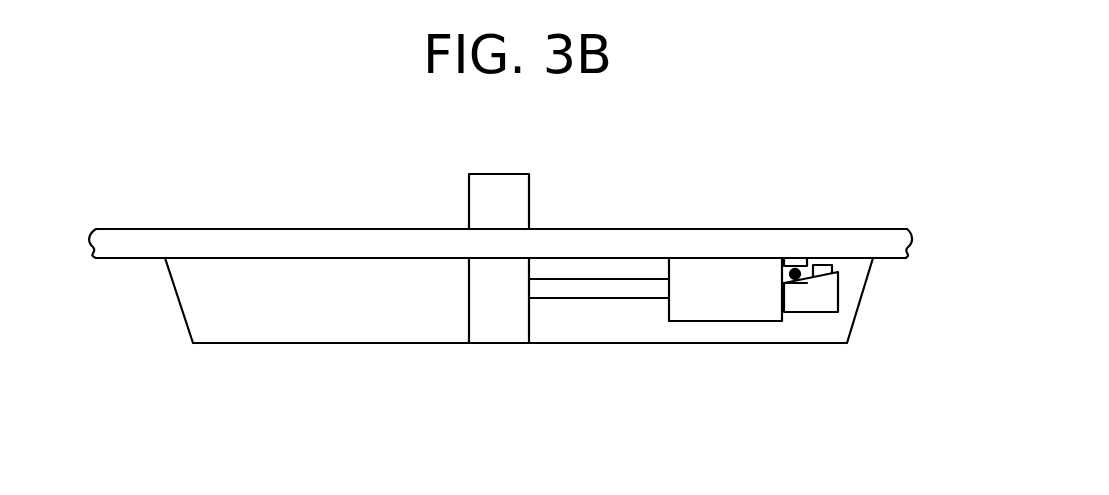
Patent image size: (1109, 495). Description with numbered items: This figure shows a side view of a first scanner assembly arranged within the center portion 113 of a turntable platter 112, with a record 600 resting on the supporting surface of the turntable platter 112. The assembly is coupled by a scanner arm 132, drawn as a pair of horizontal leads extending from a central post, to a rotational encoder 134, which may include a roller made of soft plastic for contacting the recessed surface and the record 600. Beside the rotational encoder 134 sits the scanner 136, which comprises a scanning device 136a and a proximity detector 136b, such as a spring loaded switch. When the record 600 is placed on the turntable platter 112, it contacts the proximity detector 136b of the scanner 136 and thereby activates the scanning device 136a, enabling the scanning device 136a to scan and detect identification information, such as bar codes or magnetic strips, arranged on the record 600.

The record 600 is at (855, 241).
The turntable platter 112 is at (152, 259).
The center portion 113 is at (337, 345).
The scanner arm 132 is at (565, 299).
The rotational encoder 134 is at (748, 303).
The scanner 136 is at (812, 294).
The scanning device 136a is at (838, 272).
The proximity detector 136b is at (792, 262).